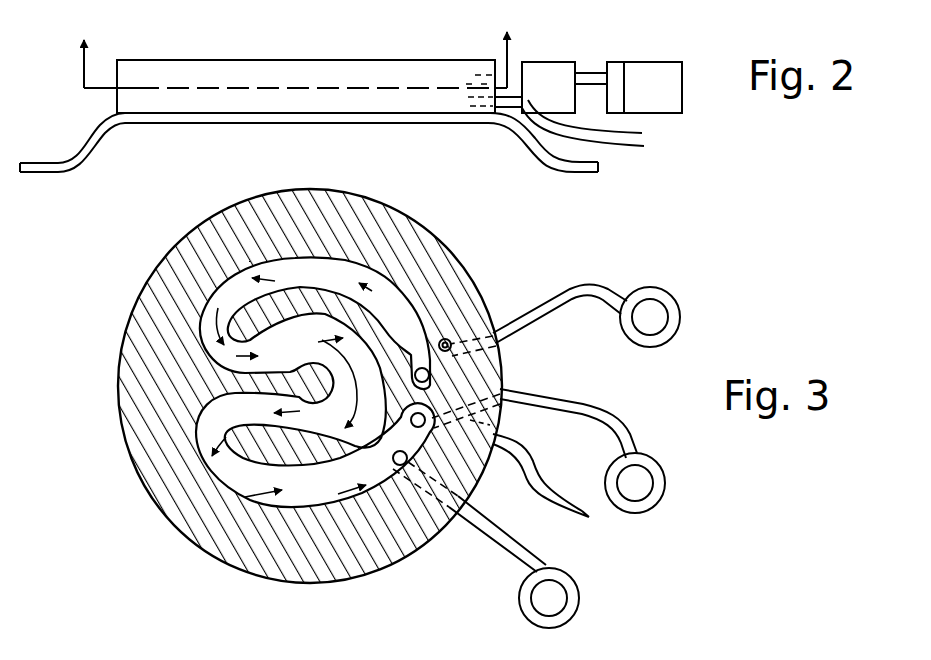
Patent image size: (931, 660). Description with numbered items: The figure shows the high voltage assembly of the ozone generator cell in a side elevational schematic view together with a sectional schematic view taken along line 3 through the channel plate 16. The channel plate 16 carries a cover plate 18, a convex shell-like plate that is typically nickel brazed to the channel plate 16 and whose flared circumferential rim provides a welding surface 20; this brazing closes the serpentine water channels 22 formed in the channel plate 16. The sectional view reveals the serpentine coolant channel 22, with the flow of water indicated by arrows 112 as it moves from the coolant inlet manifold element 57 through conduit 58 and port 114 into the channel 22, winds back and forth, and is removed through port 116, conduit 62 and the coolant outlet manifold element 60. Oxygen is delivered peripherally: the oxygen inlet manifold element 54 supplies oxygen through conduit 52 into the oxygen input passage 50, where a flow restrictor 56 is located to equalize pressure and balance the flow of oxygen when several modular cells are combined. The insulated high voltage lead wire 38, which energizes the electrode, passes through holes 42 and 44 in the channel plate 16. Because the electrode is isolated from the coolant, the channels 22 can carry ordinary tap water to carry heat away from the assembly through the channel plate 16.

In FIG. 2, the section line 3— 3 is at (294, 44).
In FIG. 2, the channel plate 16 is at (282, 60).
In FIG. 3, the channel plate 16 is at (406, 217).
In FIG. 2, the cover plate 18 is at (99, 133).
In FIG. 2, the welding surface 20 is at (48, 173).
In FIG. 3, the serpentine water channels 22 is at (200, 430).
In FIG. 2, the insulated high voltage lead wire 38 is at (650, 137).
In FIG. 3, the insulated high voltage lead wire 38 is at (538, 487).
In FIG. 3, the hole 42 is at (404, 424).
In FIG. 3, the hole 44 is at (496, 416).
In FIG. 3, the oxygen input passage 50 is at (452, 352).
In FIG. 3, the conduit 52 is at (577, 283).
In FIG. 2, the oxygen inlet manifold element 54 is at (652, 62).
In FIG. 3, the oxygen inlet manifold element 54 is at (679, 306).
In FIG. 3, the flow restrictor 56 is at (450, 338).
In FIG. 2, the coolant inlet manifold element 57 is at (614, 62).
In FIG. 3, the coolant inlet manifold element 57 is at (641, 513).
In FIG. 3, the conduit 58 is at (548, 406).
In FIG. 2, the coolant outlet manifold element 60 is at (548, 62).
In FIG. 3, the coolant outlet manifold element 60 is at (579, 602).
In FIG. 3, the conduit 62 is at (500, 521).
In FIG. 3, the arrows 112 is at (216, 330).
In FIG. 3, the port 114 is at (418, 330).
In FIG. 3, the port 116 is at (440, 524).